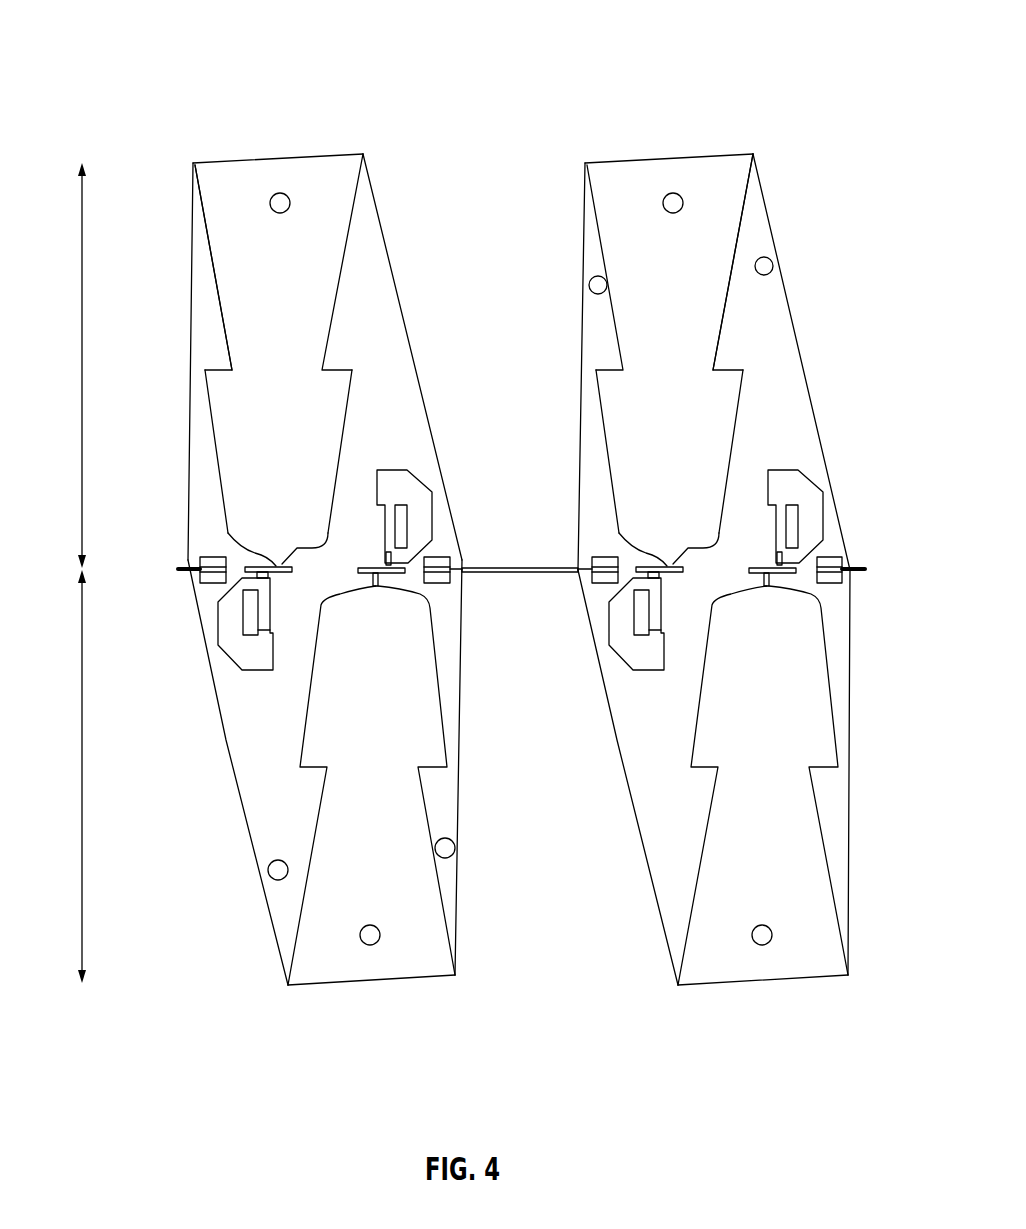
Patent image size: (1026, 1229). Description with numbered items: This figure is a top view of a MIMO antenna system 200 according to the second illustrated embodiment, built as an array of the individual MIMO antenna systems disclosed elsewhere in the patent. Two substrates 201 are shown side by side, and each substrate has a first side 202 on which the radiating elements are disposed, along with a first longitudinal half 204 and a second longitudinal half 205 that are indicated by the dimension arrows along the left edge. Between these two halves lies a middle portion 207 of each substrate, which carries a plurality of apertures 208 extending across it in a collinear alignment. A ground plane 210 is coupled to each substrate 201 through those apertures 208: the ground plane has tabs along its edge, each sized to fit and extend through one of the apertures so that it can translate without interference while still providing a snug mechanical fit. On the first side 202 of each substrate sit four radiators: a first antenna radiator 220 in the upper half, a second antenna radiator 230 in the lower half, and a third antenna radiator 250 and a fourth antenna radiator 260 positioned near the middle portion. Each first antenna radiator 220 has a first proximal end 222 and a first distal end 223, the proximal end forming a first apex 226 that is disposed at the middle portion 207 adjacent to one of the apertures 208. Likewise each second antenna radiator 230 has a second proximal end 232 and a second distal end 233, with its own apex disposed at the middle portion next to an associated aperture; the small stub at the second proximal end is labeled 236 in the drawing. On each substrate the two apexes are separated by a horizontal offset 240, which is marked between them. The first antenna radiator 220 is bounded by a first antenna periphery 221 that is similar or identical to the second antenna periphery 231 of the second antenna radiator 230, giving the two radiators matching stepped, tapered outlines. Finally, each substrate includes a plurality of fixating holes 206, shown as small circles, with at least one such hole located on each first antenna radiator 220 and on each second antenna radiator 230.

The MIMO antenna system 200 is at (180, 33).
The substrate 201 is at (380, 266).
The first side 202 is at (400, 385).
The first longitudinal half 204 is at (82, 362).
The second longitudinal half 205 is at (82, 795).
The fixating holes 206 is at (282, 193).
The middle portion 207 is at (200, 565).
The apertures 208 is at (190, 572).
The ground plane 210 is at (538, 567).
The first antenna radiator 220 is at (224, 236).
The first antenna periphery 221 is at (225, 310).
The first proximal end 222 is at (258, 555).
The first distal end 223 is at (247, 160).
The first apex 226 is at (295, 553).
The second antenna radiator 230 is at (305, 951).
The second antenna periphery 231 is at (430, 814).
The second proximal end 232 is at (382, 575).
The second distal end 233 is at (375, 985).
The hinge pin 236 is at (380, 587).
The horizontal offset 240 is at (350, 587).
The third antenna radiator 250 is at (410, 489).
The fourth antenna radiator 260 is at (233, 652).